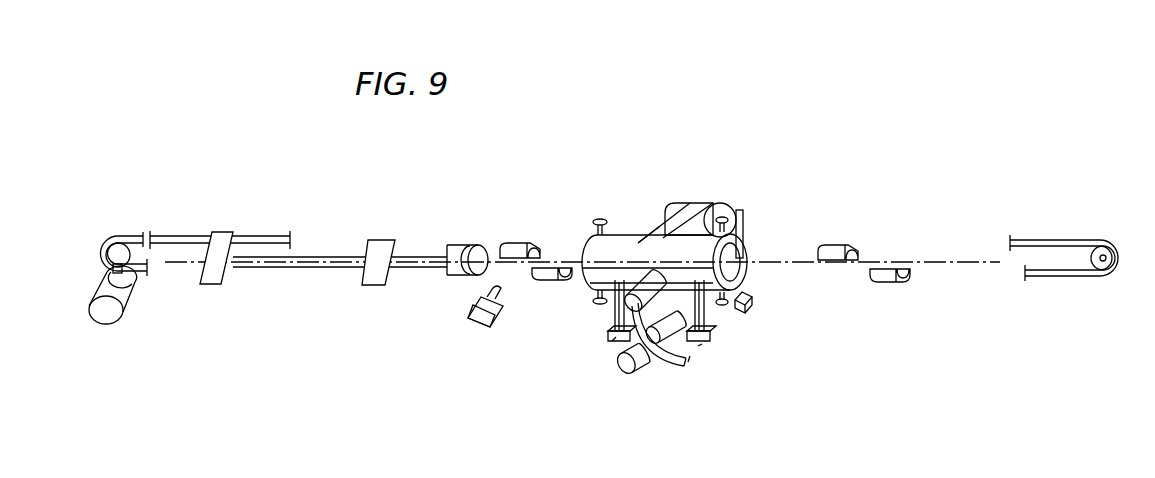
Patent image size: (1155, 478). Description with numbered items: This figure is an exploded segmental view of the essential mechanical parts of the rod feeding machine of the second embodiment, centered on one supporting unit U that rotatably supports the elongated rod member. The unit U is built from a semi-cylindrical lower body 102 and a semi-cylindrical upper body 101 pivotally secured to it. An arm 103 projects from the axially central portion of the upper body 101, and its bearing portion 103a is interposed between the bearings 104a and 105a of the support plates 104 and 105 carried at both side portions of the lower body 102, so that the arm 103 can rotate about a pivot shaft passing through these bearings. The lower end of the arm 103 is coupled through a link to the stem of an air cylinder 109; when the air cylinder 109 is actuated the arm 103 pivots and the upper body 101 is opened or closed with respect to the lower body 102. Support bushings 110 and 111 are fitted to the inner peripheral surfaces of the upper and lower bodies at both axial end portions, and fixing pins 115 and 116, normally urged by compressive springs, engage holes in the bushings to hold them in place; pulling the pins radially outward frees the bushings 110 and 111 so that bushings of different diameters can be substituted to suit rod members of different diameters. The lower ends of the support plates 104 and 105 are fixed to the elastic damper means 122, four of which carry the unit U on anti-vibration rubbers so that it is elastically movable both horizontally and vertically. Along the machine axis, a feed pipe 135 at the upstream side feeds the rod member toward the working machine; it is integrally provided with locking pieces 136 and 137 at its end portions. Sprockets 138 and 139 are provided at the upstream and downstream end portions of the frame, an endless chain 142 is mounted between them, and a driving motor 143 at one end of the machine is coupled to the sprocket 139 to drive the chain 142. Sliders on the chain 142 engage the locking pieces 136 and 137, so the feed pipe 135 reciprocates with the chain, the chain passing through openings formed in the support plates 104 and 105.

The upper body 101 is at (743, 253).
The lower body 102 is at (738, 275).
The arm 103 is at (697, 207).
The bearing portion 103a is at (686, 205).
The support plate 104 is at (628, 308).
The bearing 104a is at (673, 203).
The support plate 105 is at (720, 313).
The bearing 105a is at (724, 206).
The air cylinder 109 is at (632, 372).
The support bushing 110 is at (520, 245).
The support bushing 111 is at (548, 280).
The fixing pin 115 is at (602, 217).
The fixing pin 116 is at (600, 306).
The elastic damper means 122 is at (609, 347).
The feed pipe 135 is at (412, 273).
The locking piece 136 is at (382, 243).
The locking piece 137 is at (222, 235).
The sprocket 138 is at (1102, 252).
The sprocket 139 is at (112, 240).
The endless chain 142 is at (188, 234).
The driving motor 143 is at (105, 313).
The supporting unit U is at (636, 228).